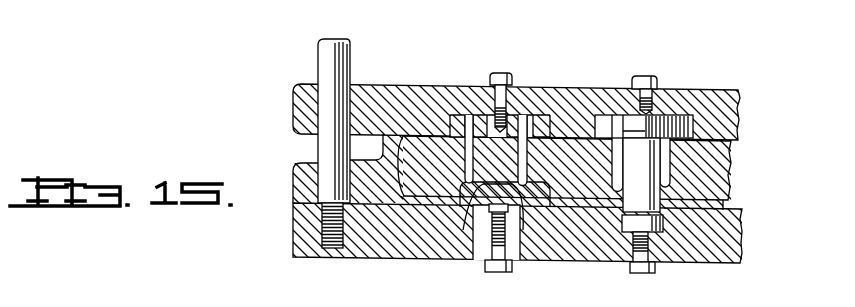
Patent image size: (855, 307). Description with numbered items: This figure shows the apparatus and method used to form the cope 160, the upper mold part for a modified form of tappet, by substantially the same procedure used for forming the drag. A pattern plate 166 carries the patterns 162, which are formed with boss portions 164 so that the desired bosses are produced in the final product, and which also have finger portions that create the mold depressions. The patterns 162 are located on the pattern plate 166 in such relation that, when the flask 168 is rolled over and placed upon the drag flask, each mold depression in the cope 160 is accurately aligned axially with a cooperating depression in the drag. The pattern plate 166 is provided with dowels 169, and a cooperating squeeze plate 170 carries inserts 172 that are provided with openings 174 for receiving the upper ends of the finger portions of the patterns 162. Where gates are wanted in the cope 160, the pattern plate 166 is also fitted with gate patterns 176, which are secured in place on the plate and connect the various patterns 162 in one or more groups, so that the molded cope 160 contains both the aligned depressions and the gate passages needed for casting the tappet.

The cope 160 is at (730, 152).
The pattern 162 is at (465, 205).
The boss portion 164 is at (510, 264).
The pattern plate 166 is at (293, 230).
The flask 168 is at (383, 144).
The dowel 169 is at (336, 54).
The squeeze plate 170 is at (390, 92).
The insert 172 is at (515, 117).
The opening 174 is at (455, 113).
The gate pattern 176 is at (600, 212).